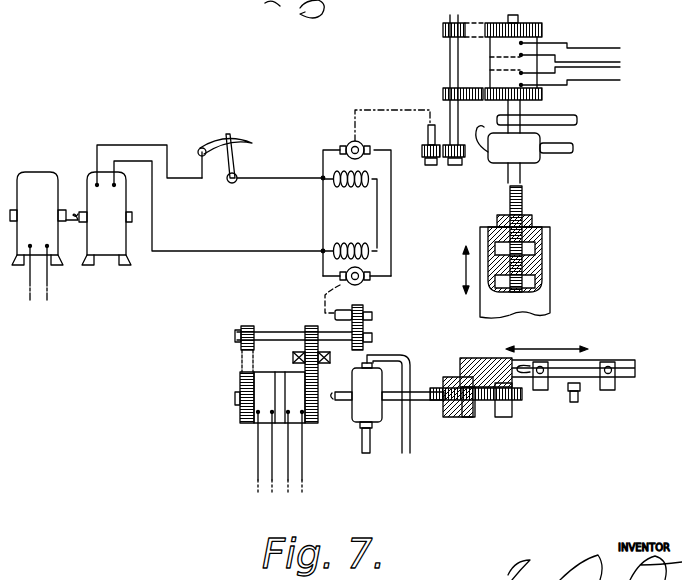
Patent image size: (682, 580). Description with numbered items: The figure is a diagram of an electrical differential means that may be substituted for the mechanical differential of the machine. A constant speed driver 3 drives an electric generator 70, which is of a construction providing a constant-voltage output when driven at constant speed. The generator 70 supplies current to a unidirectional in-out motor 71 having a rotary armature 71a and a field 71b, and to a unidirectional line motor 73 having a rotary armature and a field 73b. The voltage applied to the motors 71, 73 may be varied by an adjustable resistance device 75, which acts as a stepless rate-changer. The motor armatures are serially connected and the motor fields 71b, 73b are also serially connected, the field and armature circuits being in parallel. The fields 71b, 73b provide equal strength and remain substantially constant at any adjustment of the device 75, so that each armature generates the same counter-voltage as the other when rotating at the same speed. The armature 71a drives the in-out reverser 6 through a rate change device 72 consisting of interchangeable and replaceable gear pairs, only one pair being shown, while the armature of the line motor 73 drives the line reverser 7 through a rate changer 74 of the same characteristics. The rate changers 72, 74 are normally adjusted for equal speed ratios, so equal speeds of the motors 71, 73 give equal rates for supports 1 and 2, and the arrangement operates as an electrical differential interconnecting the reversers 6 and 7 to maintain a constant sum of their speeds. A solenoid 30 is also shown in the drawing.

The support 1 is at (555, 242).
The support 2 is at (478, 356).
The constant speed driver 3 is at (30, 172).
The in-out reverser 6 is at (530, 20).
The line reverser 7 is at (228, 378).
The solenoid 30 is at (365, 402).
The electric generator 70 is at (83, 165).
The unidirectional in-out motor 71 is at (337, 140).
The rotary armature 71a is at (358, 148).
The field 71b is at (350, 209).
The rate change device 72 is at (442, 168).
The unidirectional line motor 73 is at (316, 272).
The field 73b is at (350, 240).
The rate changer 74 is at (368, 329).
The adjustable resistance device 75 is at (210, 138).